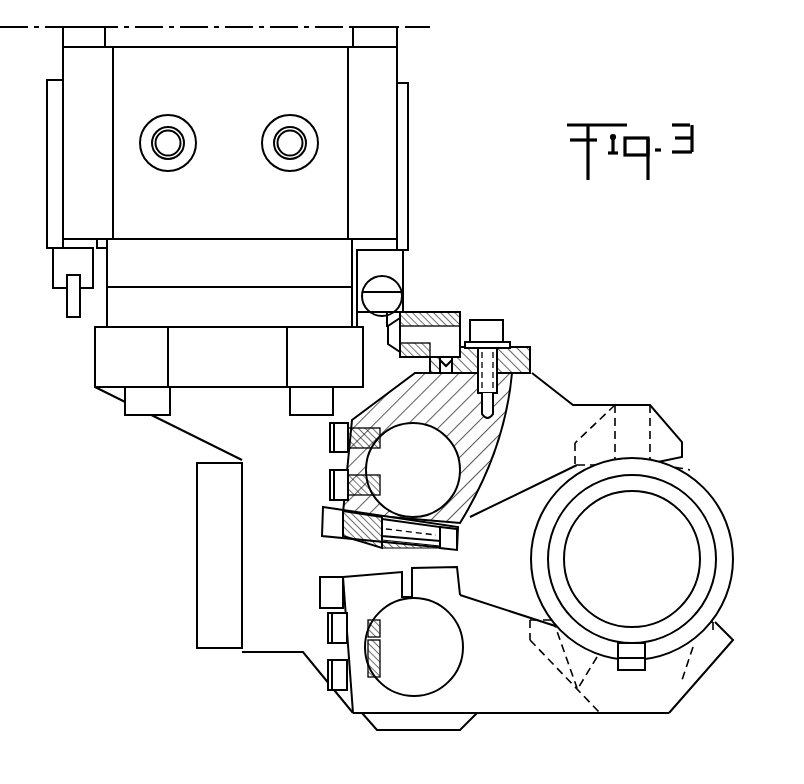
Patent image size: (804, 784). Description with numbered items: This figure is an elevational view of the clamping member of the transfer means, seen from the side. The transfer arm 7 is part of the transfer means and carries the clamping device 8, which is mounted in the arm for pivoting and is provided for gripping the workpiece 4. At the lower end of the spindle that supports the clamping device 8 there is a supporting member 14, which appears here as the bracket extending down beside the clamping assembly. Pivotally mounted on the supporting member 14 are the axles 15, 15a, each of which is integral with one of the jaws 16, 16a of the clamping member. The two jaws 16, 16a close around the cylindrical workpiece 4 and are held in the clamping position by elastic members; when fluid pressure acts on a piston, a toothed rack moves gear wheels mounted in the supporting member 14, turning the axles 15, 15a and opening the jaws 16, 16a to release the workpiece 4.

The transfer arm 7 is at (383, 72).
The clamping device 8 is at (537, 368).
The jaw 16 is at (543, 417).
The jaw 16a is at (532, 690).
The workpiece 4 is at (697, 518).
The axle 15 is at (388, 462).
The axle 15a is at (407, 668).
The supporting member 14 is at (270, 617).